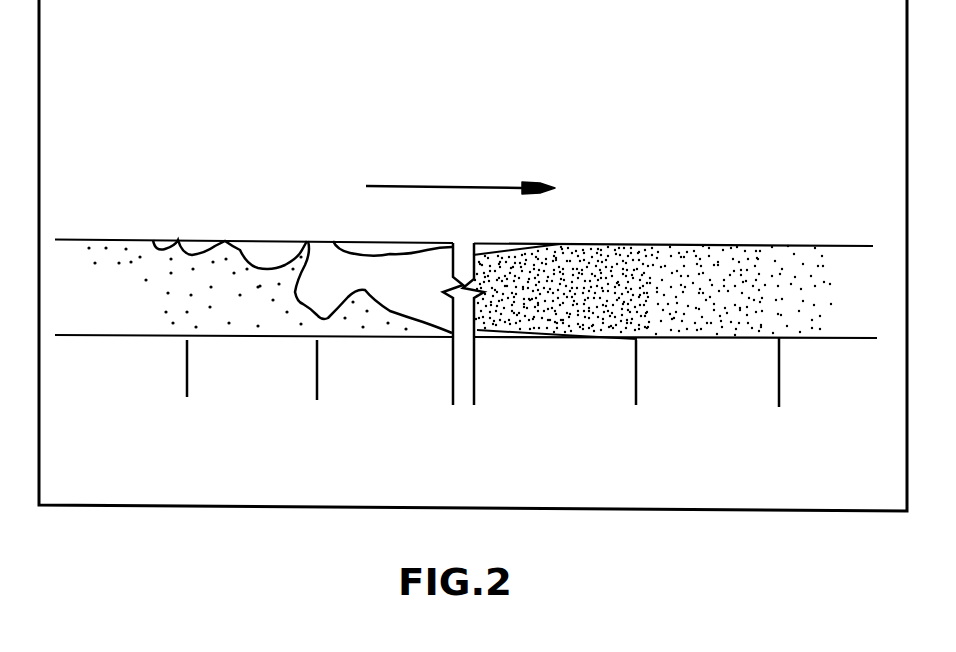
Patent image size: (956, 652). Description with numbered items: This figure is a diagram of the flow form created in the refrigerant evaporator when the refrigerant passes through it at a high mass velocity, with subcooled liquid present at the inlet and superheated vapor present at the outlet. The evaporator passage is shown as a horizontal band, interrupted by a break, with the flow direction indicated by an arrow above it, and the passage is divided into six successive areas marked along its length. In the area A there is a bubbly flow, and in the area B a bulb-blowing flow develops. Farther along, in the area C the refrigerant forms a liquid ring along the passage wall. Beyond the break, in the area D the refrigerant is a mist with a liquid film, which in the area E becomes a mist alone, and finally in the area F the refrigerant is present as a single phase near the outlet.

The area of bubbly flow A is at (131, 383).
The area of bulb-blowing flow B is at (238, 397).
The area of liquid ring C is at (397, 396).
The area of mist with liquid film D is at (543, 367).
The area of mist E is at (715, 386).
The area of single-phase flow F is at (850, 386).